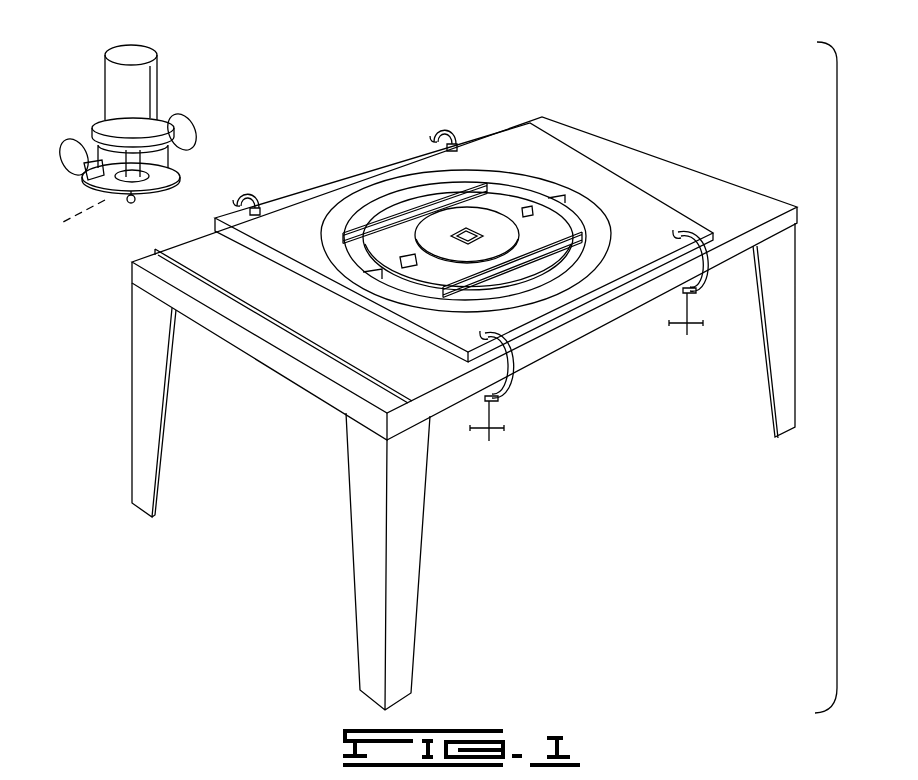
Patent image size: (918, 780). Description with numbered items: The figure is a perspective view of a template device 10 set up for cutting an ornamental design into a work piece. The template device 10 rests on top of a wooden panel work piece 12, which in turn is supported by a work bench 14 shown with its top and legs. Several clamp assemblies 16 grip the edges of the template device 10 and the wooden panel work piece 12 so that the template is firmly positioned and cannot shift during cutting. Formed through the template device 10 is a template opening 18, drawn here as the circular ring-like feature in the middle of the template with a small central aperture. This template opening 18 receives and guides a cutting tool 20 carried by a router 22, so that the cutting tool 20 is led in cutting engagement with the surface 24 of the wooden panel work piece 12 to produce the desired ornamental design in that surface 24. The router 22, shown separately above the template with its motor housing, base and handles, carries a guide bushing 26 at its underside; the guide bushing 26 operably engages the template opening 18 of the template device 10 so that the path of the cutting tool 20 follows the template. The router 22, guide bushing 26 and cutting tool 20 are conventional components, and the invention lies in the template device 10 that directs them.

The template device 10 is at (375, 152).
The wooden panel work piece 12 is at (647, 176).
The work bench 14 is at (757, 190).
The clamp assemblies 16 is at (256, 200).
The template opening 18 is at (469, 234).
The cutting tool 20 is at (168, 203).
The router 22 is at (163, 77).
The surface 24 is at (337, 332).
The guide bushing 26 is at (89, 221).